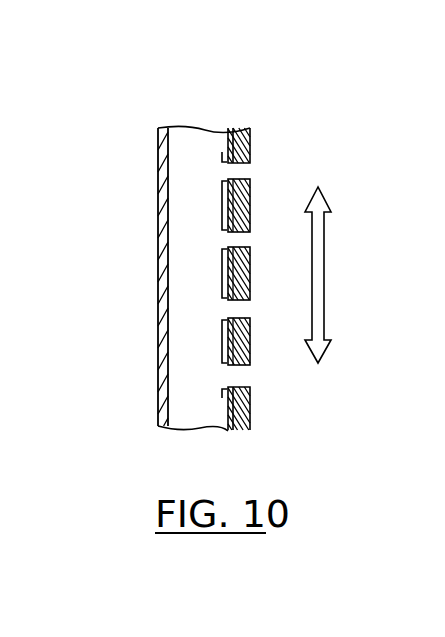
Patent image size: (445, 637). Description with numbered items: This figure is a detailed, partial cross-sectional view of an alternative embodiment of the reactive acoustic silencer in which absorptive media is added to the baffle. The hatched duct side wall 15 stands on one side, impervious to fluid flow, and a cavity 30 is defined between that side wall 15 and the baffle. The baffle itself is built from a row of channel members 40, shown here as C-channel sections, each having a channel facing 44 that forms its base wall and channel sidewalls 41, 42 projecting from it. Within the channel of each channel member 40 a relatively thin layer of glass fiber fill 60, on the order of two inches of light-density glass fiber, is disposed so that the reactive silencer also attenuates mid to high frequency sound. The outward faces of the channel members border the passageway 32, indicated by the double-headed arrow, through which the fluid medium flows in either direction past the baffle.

The side wall 15 is at (158, 260).
The cavity 30 is at (205, 294).
The glass fiber fill 60 is at (246, 198).
The channel member 40 is at (253, 278).
The channel facing 44 is at (250, 344).
The channel sidewall 41 is at (250, 373).
The channel sidewall 42 is at (250, 383).
The passageway 32 is at (325, 279).